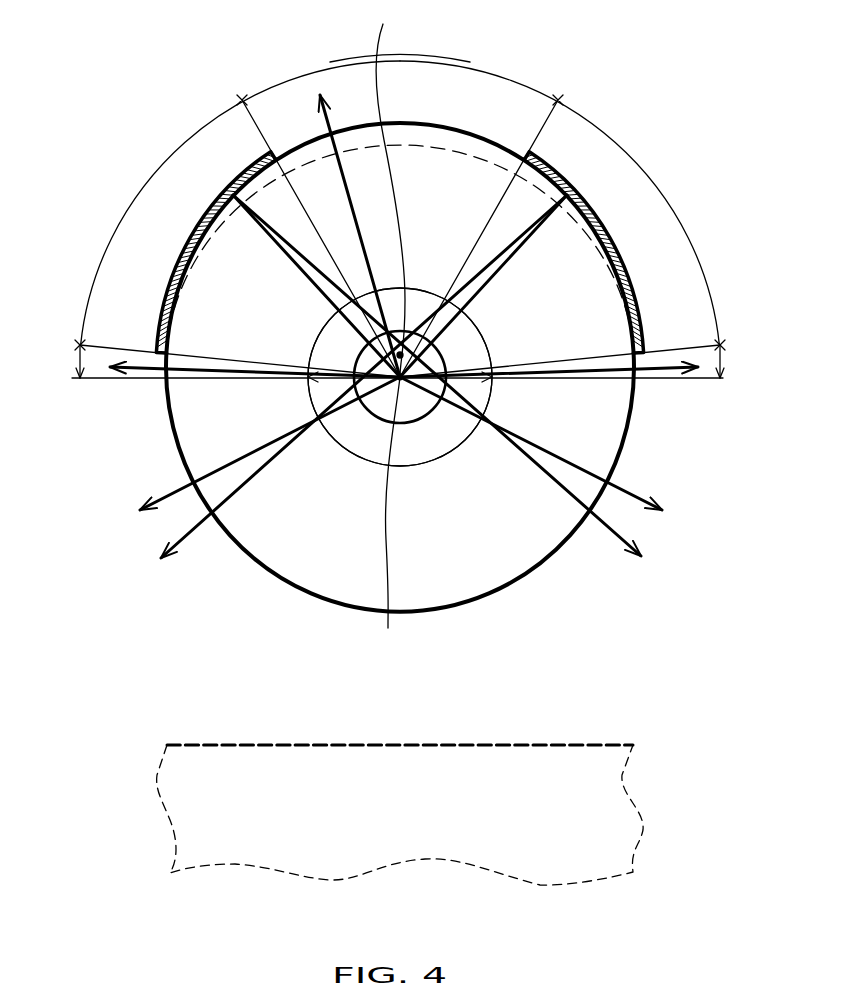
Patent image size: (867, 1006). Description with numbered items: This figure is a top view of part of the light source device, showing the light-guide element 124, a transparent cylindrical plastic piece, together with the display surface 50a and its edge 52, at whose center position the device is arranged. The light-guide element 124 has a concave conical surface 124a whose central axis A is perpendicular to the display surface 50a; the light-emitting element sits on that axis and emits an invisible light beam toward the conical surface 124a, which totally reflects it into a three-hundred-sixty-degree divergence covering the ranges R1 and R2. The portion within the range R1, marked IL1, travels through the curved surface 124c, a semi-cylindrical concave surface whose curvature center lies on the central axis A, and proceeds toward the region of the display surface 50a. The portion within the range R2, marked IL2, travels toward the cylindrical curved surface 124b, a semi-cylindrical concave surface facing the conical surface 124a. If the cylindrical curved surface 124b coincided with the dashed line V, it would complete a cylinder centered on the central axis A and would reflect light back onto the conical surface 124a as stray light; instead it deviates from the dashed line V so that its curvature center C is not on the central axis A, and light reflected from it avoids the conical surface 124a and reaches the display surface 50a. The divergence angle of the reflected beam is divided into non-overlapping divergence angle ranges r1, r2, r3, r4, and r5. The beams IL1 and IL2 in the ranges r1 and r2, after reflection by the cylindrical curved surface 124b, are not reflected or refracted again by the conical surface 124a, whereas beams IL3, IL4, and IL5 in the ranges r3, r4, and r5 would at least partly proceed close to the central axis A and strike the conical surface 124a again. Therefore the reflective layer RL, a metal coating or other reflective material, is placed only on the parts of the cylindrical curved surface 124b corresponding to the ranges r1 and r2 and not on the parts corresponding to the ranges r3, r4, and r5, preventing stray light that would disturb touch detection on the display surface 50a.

The light-guide element 124 is at (432, 601).
The conical surface 124a is at (424, 406).
The cylindrical curved surface 124b is at (445, 130).
The curved surface 124c is at (494, 587).
The reflective layer RL is at (243, 178).
The dashed line V is at (298, 163).
The curvature center C is at (388, 188).
The central axis A is at (390, 516).
The range R1 is at (336, 442).
The range R2 is at (472, 318).
The invisible light beam IL1 is at (185, 488).
The invisible light beam IL2 is at (208, 227).
The invisible light beam IL3 is at (136, 370).
The invisible light beam IL4 is at (338, 172).
The invisible light beam IL5 is at (664, 370).
The divergence angle range r1 is at (132, 206).
The divergence angle range r2 is at (623, 147).
The divergence angle range r3 is at (78, 371).
The divergence angle range r4 is at (340, 66).
The divergence angle range r5 is at (722, 371).
The edge 52 is at (594, 741).
The display surface 50a is at (594, 808).